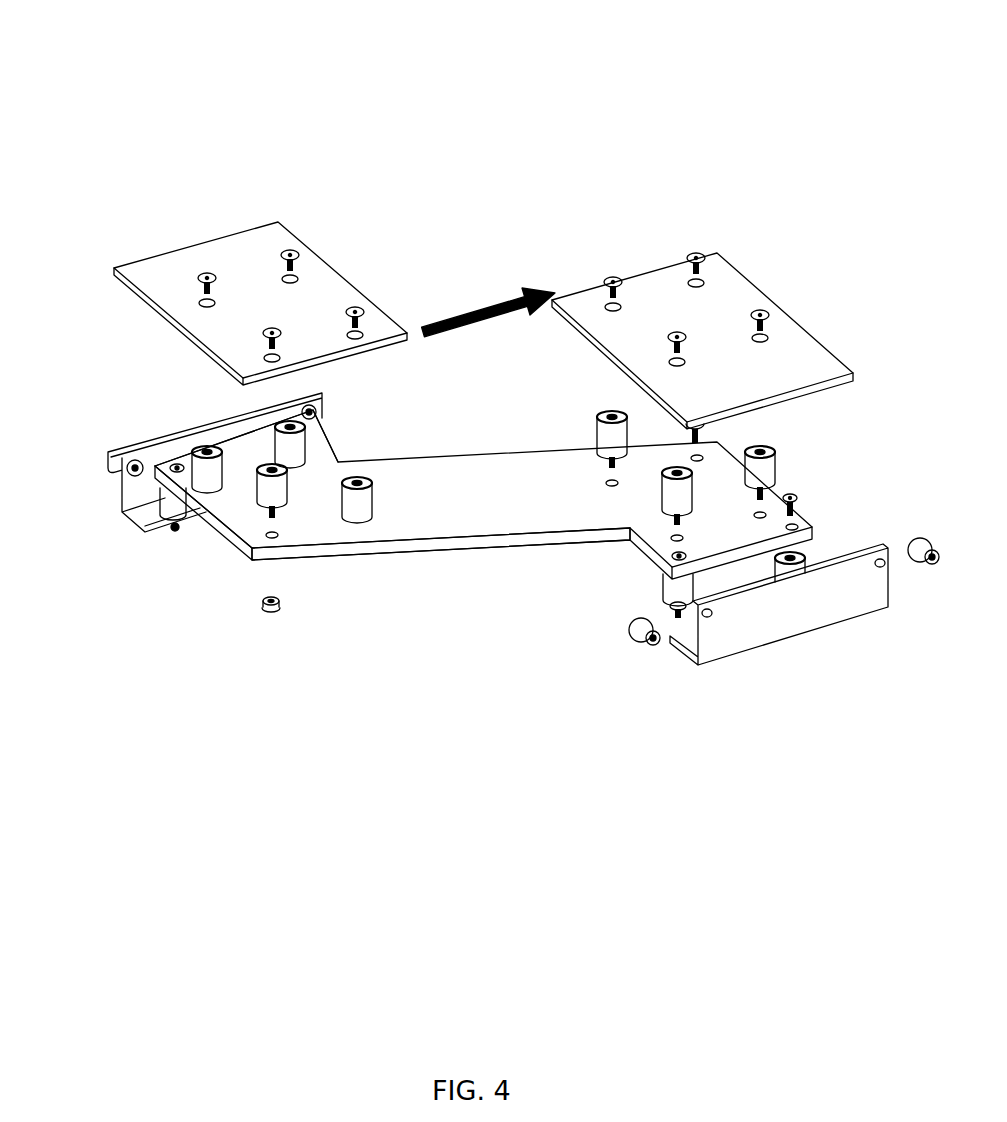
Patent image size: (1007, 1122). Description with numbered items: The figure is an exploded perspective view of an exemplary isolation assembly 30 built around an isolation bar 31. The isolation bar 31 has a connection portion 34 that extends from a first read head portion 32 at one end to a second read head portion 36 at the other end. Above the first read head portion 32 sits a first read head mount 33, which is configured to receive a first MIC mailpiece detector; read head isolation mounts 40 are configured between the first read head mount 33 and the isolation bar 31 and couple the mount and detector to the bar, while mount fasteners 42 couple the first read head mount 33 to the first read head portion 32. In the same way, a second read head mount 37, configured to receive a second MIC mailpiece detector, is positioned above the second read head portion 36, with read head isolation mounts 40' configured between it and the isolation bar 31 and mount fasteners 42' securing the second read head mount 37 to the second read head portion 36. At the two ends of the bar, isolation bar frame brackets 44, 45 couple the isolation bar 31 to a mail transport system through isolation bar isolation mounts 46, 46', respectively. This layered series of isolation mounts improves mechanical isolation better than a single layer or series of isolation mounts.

The isolation assembly 30 is at (300, 83).
The isolation bar 31 is at (522, 522).
The first read head portion 32 is at (243, 500).
The first read head mount 33 is at (157, 278).
The connection portion 34 is at (468, 533).
The second read head portion 36 is at (652, 527).
The second read head mount 37 is at (725, 308).
The read head isolation mounts 40 is at (232, 438).
The read head isolation mounts 40' is at (756, 468).
The mount fasteners 42 is at (275, 253).
The mount fasteners 42' is at (730, 374).
The isolation bar frame bracket 44 is at (133, 487).
The isolation bar frame bracket 45 is at (773, 617).
The isolation bar isolation mount 46 is at (138, 564).
The isolation bar isolation mount 46' is at (822, 634).